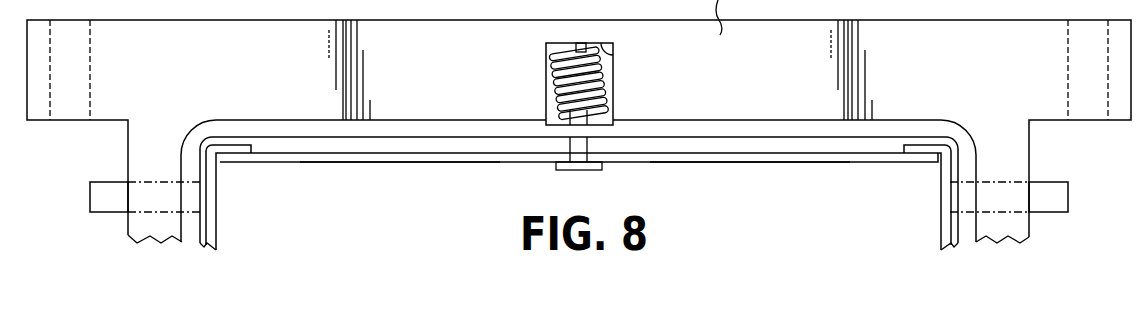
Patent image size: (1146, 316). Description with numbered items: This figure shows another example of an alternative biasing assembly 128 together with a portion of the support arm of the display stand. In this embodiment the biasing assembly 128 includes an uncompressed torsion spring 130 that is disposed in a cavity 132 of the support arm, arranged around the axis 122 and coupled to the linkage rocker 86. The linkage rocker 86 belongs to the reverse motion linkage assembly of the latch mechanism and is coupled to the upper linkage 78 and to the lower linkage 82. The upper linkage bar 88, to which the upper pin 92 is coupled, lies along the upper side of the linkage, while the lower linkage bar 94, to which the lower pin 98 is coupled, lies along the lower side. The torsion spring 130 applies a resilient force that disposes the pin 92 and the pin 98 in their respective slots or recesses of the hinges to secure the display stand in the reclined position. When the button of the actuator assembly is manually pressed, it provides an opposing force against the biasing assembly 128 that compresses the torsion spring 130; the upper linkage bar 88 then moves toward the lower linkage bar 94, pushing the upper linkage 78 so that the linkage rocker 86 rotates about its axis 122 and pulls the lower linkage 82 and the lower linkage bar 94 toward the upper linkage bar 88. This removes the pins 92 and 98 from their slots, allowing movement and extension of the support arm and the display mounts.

The upper linkage 78 is at (401, 163).
The lower linkage 82 is at (745, 163).
The linkage rocker 86 is at (577, 171).
The upper linkage bar 88 is at (218, 203).
The pin 92 is at (90, 197).
The lower linkage bar 94 is at (941, 197).
The pin 98 is at (1068, 197).
The axis 122 is at (590, 148).
The biasing assembly 128 is at (620, 84).
The torsion spring 130 is at (546, 88).
The cavity 132 is at (612, 51).